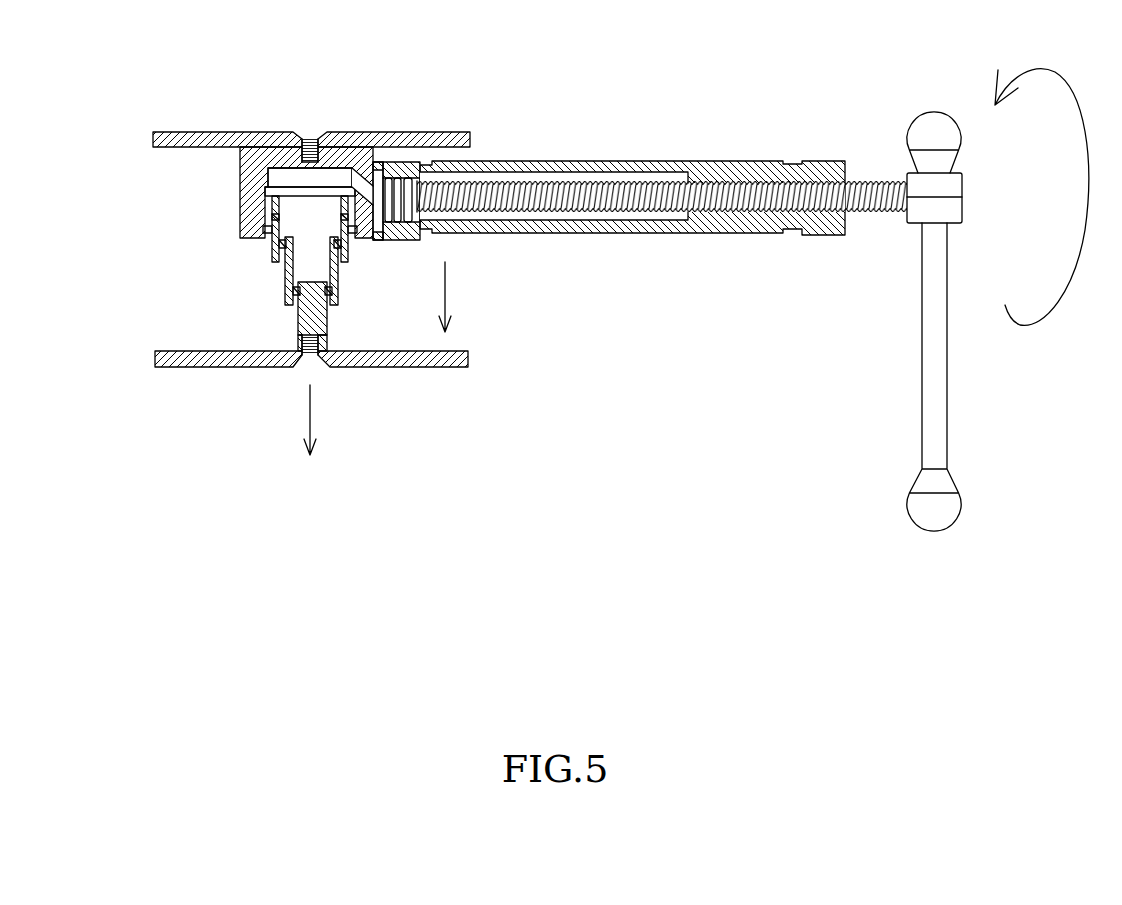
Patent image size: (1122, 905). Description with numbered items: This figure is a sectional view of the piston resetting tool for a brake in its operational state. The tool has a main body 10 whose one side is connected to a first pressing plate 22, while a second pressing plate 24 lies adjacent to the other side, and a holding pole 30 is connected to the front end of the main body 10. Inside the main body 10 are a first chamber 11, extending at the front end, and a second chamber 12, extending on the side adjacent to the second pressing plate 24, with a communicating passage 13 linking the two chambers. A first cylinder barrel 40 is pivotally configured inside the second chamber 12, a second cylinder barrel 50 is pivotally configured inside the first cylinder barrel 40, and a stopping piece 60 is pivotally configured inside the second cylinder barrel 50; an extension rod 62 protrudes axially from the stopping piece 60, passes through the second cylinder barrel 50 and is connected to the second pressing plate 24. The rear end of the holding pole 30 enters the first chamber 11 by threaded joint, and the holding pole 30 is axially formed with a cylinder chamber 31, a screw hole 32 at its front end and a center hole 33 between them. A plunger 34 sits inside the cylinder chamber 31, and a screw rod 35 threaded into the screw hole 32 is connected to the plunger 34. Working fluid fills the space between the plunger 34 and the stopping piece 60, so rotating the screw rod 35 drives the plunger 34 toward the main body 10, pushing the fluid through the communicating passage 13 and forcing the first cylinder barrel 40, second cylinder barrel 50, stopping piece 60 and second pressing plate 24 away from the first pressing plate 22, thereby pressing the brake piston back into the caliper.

The main body 10 is at (248, 170).
The first chamber 11 is at (377, 187).
The second chamber 12 is at (277, 177).
The communicating passage 13 is at (358, 175).
The first pressing plate 22 is at (200, 137).
The second pressing plate 24 is at (207, 360).
The holding pole 30 is at (628, 162).
The cylinder chamber 31 is at (572, 217).
The screw hole 32 is at (827, 213).
The center hole 33 is at (752, 214).
The plunger 34 is at (400, 222).
The screw rod 35 is at (870, 182).
The first cylinder barrel 40 is at (277, 250).
The second cylinder barrel 50 is at (287, 280).
The stopping piece 60 is at (290, 307).
The extension rod 62 is at (297, 327).